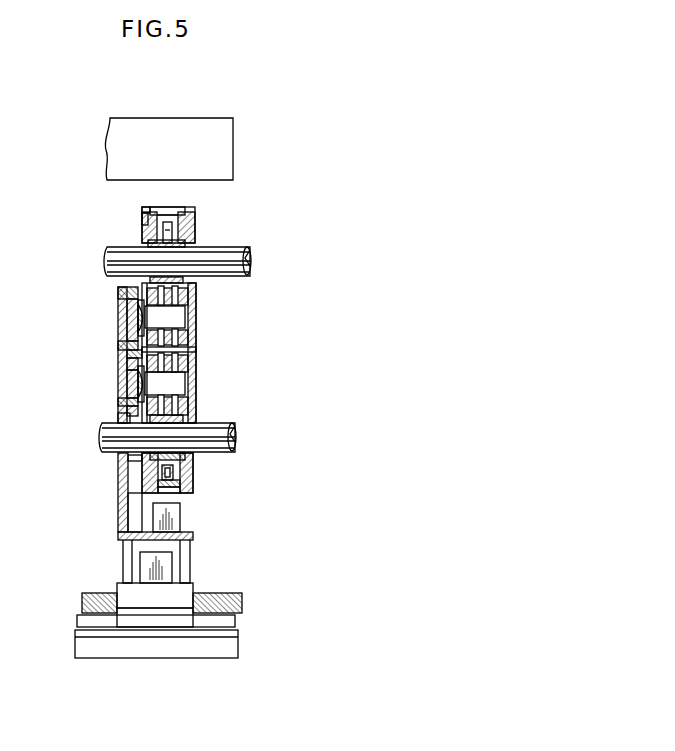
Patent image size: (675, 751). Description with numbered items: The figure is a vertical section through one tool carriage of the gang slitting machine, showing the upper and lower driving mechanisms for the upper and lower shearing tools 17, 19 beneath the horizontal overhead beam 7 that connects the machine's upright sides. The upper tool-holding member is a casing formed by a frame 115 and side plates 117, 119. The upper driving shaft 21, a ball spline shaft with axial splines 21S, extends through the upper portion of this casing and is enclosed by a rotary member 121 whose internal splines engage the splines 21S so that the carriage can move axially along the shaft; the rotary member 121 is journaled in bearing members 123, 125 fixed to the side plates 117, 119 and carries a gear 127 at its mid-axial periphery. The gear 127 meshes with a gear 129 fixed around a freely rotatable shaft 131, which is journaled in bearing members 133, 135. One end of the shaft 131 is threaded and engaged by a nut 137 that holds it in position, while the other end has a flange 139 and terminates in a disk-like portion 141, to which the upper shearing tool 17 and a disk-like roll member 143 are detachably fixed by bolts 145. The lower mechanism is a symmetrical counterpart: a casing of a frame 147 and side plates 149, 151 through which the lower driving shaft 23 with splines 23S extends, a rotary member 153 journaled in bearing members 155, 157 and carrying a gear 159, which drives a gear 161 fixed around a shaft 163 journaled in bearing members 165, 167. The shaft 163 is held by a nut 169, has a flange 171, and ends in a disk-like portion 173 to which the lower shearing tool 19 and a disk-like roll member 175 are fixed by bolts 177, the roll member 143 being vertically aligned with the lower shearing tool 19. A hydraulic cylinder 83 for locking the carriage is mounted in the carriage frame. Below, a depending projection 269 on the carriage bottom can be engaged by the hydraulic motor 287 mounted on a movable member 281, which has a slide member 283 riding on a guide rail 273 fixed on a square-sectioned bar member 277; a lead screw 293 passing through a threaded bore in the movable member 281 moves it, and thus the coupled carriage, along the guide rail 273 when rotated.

The horizontal overhead beam 7 is at (182, 128).
The frame 115 is at (168, 207).
The side plate 117 is at (197, 230).
The side plate 119 is at (147, 210).
The rotary member 121 is at (197, 244).
The bearing member 123 is at (190, 242).
The bearing member 125 is at (145, 222).
The gear 127 is at (197, 207).
The upper driving shaft 21 is at (254, 256).
The splines 21S is at (237, 247).
The gear 129 is at (192, 292).
The shaft 131 is at (172, 316).
The bearing member 133 is at (190, 336).
The bearing member 135 is at (124, 345).
The nut 137 is at (193, 327).
The flange 139 is at (140, 318).
The disk-like portion 141 is at (128, 300).
The disk-like roll member 143 is at (128, 310).
The bolts 145 is at (120, 296).
The upper shearing tool 17 is at (140, 330).
The lower shearing tool 19 is at (137, 392).
The gear 161 is at (190, 402).
The shaft 163 is at (175, 380).
The bearing member 165 is at (192, 352).
The bearing member 167 is at (130, 356).
The nut 169 is at (194, 370).
The flange 171 is at (122, 372).
The disk-like portion 173 is at (128, 416).
The disk-like roll member 175 is at (124, 382).
The bolts 177 is at (124, 402).
The lower driving shaft 23 is at (240, 439).
The splines 23S is at (228, 426).
The frame 147 is at (180, 496).
The side plate 149 is at (190, 490).
The side plate 151 is at (128, 490).
The rotary member 153 is at (195, 460).
The bearing member 155 is at (180, 474).
The bearing member 157 is at (140, 475).
The gear 159 is at (158, 492).
The hydraulic cylinder 83 is at (177, 521).
The depending projection 269 is at (186, 558).
The guide rail 273 is at (225, 620).
The square-sectioned bar member 277 is at (225, 652).
The movable member 281 is at (132, 596).
The slide member 283 is at (155, 624).
The hydraulic motor 287 is at (165, 568).
The lead screw 293 is at (243, 603).